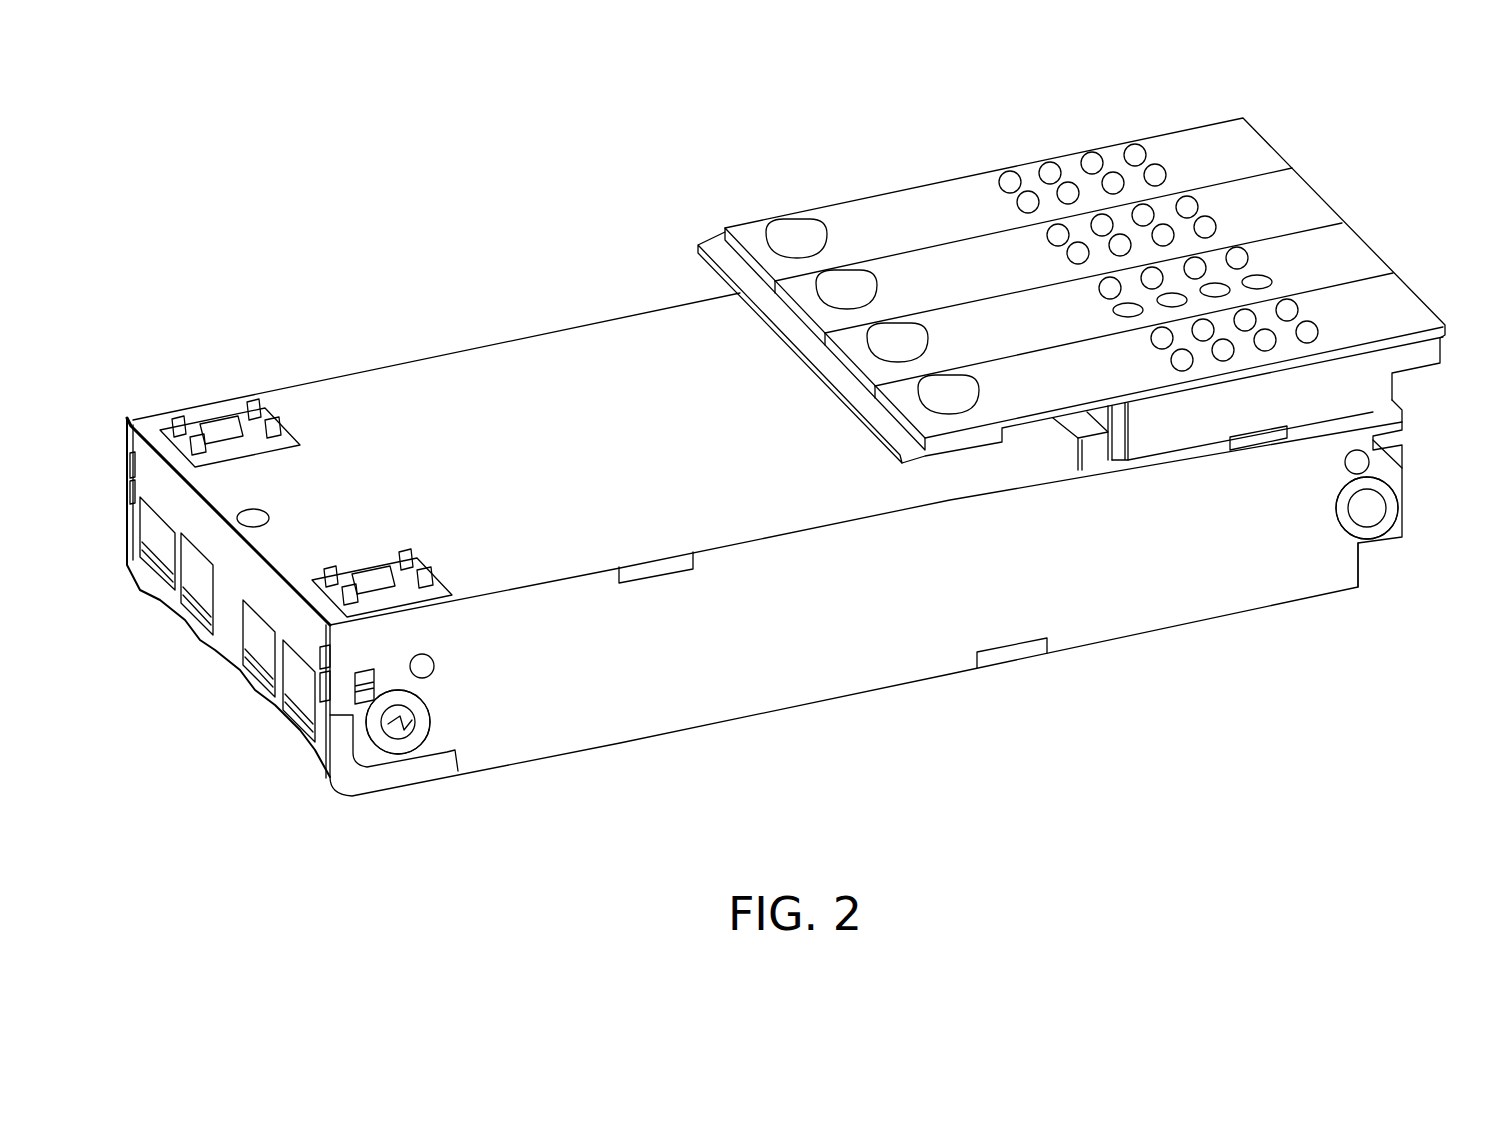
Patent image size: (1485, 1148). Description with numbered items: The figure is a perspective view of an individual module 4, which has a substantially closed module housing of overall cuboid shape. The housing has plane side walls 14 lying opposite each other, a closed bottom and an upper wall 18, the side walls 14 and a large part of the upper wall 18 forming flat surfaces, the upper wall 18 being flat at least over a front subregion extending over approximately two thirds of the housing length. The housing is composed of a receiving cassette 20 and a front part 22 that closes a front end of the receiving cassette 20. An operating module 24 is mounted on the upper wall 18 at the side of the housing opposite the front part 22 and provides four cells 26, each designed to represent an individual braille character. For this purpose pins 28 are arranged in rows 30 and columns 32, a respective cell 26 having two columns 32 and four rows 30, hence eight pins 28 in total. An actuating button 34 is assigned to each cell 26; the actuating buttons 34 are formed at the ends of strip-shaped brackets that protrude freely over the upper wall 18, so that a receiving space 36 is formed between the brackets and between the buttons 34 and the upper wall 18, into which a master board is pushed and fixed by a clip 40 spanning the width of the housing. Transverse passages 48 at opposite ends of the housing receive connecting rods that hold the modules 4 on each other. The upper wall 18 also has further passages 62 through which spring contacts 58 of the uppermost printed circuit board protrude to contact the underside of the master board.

The module 4 is at (225, 118).
The side wall 14 is at (842, 650).
The upper wall 18 is at (428, 368).
The receiving cassette 20 is at (1183, 593).
The front part 22 is at (240, 570).
The operating module 24 is at (955, 214).
The cell 26 is at (1112, 160).
The pin 28 is at (1050, 172).
The row 30 is at (1182, 362).
The column 32 is at (1302, 310).
The actuating button 34 is at (797, 233).
The receiving space 36 is at (1013, 452).
The clip 40 is at (1097, 457).
The transverse passage 48 is at (405, 722).
The spring contact 58 is at (182, 420).
The further passage 62 is at (230, 418).